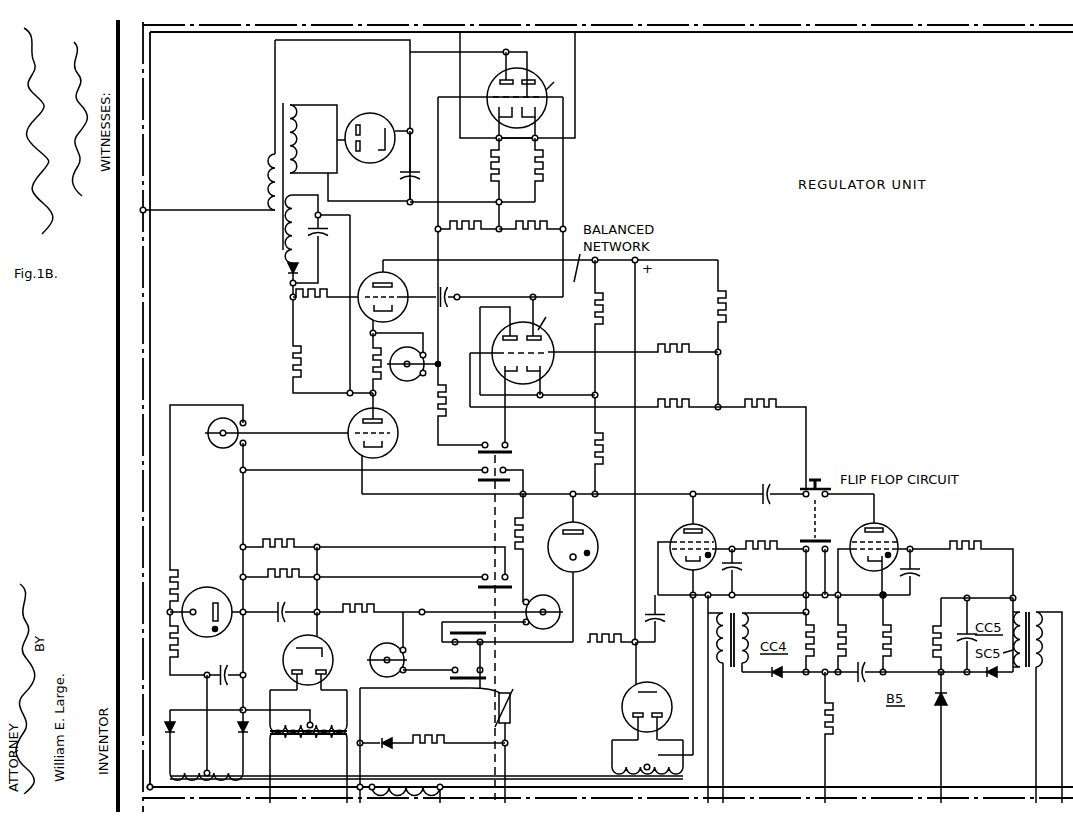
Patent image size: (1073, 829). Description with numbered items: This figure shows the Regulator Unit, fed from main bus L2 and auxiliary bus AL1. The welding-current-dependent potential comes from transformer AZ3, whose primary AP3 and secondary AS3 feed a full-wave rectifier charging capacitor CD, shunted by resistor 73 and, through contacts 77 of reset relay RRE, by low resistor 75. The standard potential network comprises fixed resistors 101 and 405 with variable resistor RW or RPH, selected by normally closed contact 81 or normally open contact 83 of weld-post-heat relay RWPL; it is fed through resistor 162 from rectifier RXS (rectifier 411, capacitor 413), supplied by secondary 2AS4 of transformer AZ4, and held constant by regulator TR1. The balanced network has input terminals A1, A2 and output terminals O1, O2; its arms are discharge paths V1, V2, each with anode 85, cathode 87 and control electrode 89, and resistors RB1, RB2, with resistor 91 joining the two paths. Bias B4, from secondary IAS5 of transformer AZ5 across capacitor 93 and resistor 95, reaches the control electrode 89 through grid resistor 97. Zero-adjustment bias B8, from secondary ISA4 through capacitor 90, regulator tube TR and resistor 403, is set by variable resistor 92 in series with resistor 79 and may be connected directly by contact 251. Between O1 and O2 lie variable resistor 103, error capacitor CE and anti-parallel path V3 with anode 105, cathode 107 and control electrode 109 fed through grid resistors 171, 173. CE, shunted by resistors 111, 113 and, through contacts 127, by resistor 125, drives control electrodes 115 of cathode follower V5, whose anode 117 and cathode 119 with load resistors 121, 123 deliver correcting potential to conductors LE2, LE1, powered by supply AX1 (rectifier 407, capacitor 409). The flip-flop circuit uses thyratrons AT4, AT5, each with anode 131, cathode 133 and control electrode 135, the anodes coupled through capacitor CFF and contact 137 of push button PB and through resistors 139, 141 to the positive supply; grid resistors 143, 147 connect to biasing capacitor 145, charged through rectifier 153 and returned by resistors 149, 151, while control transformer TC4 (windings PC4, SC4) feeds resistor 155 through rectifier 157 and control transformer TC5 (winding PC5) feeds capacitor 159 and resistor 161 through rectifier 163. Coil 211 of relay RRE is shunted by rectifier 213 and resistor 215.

The rectifier 407 is at (383, 107).
The capacitor 409 is at (398, 170).
The resistor 111 is at (475, 224).
The resistor 113 is at (542, 224).
The control electrode 115 is at (545, 72).
The anode 117 is at (527, 79).
The cathode 119 is at (517, 139).
The load resistor 121 is at (492, 163).
The load resistor 123 is at (547, 163).
The resistor 141 is at (724, 305).
The grid resistor 173 is at (688, 344).
The grid resistor 171 is at (688, 404).
The resistor 139 is at (774, 404).
The anode 105 is at (541, 338).
The control electrode 109 is at (548, 353).
The cathode 107 is at (542, 370).
The shunting resistor 125 is at (461, 413).
The normally open contacts 127 is at (512, 449).
The variable resistor 103 is at (414, 375).
The fixed resistor 101 is at (519, 532).
The resistor 91 is at (369, 360).
The capacitor 93 is at (326, 237).
The resistor 95 is at (298, 362).
The grid resistor 97 is at (334, 293).
The anode 85 is at (378, 277).
The cathode 87 is at (400, 311).
The control electrode 89 is at (400, 297).
The variable resistor 92 is at (208, 589).
The resistor 73 is at (283, 543).
The second resistor 75 is at (289, 573).
The normally open contacts 77 is at (492, 577).
The fixed resistor 79 is at (178, 581).
The normally closed contact 81 is at (507, 631).
The normally open contact 83 is at (452, 665).
The capacitor 90 is at (228, 686).
The resistor 403 is at (178, 646).
The fixed resistor 405 is at (366, 606).
The rectifier 411 is at (622, 712).
The capacitor 413 is at (660, 624).
The anode 131 is at (685, 529).
The cathode 133 is at (681, 566).
The control electrode 135 is at (712, 547).
The normally closed contact 137 is at (804, 537).
The grid resistor 143 is at (752, 556).
The biasing capacitor 145 is at (862, 685).
The grid resistor 147 is at (958, 540).
The resistor 149 is at (849, 628).
The resistor 151 is at (890, 644).
The rectifier 153 is at (945, 704).
The resistor 155 is at (810, 630).
The rectifier 157 is at (780, 679).
The capacitor 159 is at (962, 626).
The resistor 161 is at (938, 630).
The resistor 162 is at (620, 650).
The rectifier 163 is at (989, 679).
The coil 211 is at (511, 709).
The rectifier 213 is at (383, 753).
The resistor 215 is at (440, 733).
The contact 251 is at (479, 474).
The electric discharge path V1 is at (394, 442).
The electric discharge path V2 is at (400, 285).
The discharge path V3 is at (514, 369).
The discharge path V5 is at (500, 76).
The thyratron AT4 is at (711, 528).
The thyratron AT5 is at (890, 524).
The regulator tube TR is at (216, 594).
The regulator TR1 is at (584, 531).
The variable resistor RW is at (552, 594).
The variable resistor RPH is at (382, 648).
The rectifier RXS is at (661, 684).
The reset relay RRE is at (499, 680).
The weld-post-heat relay RWPL is at (470, 692).
The capacitor CD is at (276, 610).
The error capacitor CE is at (444, 290).
The capacitor CFF is at (764, 484).
The push button PB is at (815, 477).
The conductor LE1 is at (578, 65).
The conductor LE2 is at (457, 65).
The transformer AZ5 is at (327, 77).
The auxiliary direct-current supply AX1 is at (327, 127).
The bias B4 is at (313, 223).
The secondary IAS5 is at (290, 237).
The zero-adjustment bias network B8 is at (200, 758).
The secondary ISA4 is at (240, 771).
The secondary AS3 is at (320, 724).
The primary AP3 is at (307, 748).
The transformer AZ3 is at (352, 728).
The transformer AZ4 is at (456, 770).
The secondary 2AS4 is at (612, 760).
The control transformer TC4 is at (750, 694).
The primary coil PC4 is at (721, 699).
The secondary SC4 is at (747, 626).
The control transformer TC5 is at (1062, 598).
The primary coil PC5 is at (1034, 680).
The input terminal A1 is at (604, 268).
The input terminal A2 is at (605, 487).
The output terminal O1 is at (388, 336).
The output terminal O2 is at (606, 391).
The resistor RB1 is at (611, 306).
The resistor RB2 is at (591, 452).
The auxiliary bus AL1 is at (143, 398).
The main conductor L2 is at (118, 481).